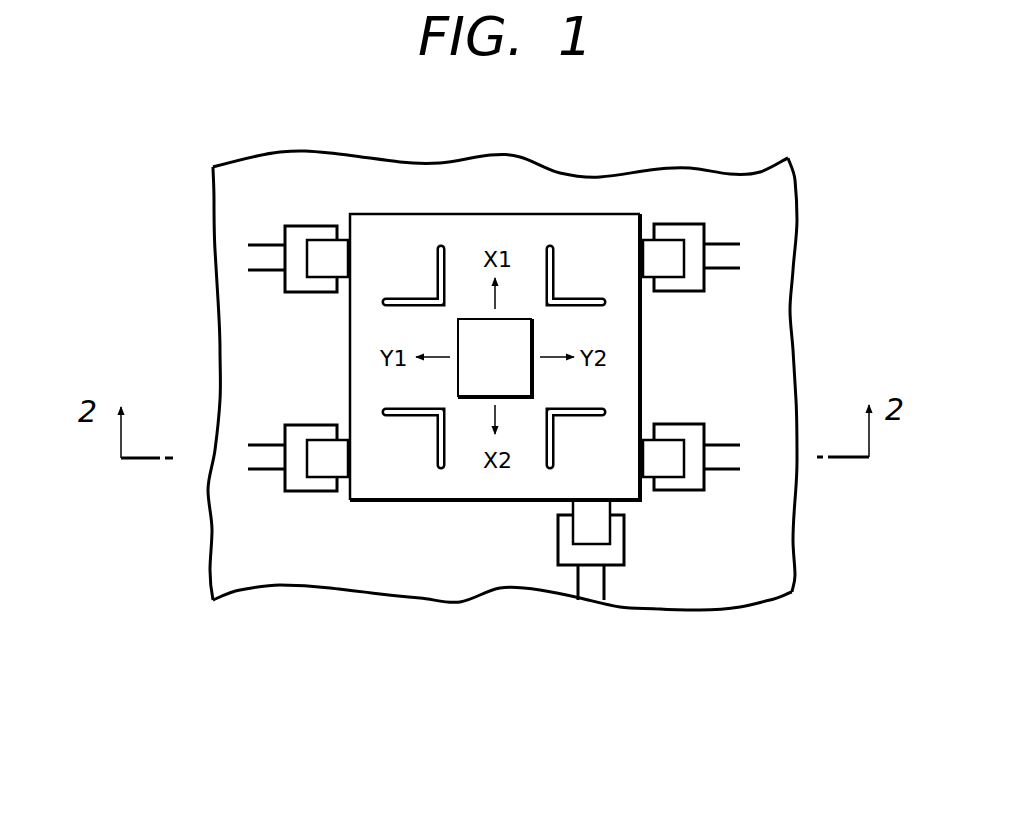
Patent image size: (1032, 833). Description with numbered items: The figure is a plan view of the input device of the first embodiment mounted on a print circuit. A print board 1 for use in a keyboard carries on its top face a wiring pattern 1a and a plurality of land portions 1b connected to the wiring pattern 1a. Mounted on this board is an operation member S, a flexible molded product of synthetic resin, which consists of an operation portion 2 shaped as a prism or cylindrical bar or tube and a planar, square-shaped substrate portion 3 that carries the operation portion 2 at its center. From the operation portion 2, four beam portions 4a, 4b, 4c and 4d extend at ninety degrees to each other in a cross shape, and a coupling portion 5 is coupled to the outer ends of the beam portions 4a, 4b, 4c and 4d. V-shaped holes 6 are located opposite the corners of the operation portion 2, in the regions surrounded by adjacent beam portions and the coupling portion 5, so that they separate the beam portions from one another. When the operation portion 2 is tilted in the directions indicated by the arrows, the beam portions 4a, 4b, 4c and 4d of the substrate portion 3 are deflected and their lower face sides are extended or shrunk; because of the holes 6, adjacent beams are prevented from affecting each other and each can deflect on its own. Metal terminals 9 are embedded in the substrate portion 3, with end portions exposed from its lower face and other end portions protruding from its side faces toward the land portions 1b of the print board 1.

The print board 1 is at (767, 182).
The wiring pattern 1a is at (722, 246).
The land portions 1b is at (316, 232).
The operation portion 2 is at (474, 382).
The substrate portion 3 is at (392, 207).
The beam portion 4a is at (516, 433).
The beam portion 4b is at (515, 283).
The beam portion 4c is at (575, 390).
The beam portion 4d is at (400, 388).
The coupling portion 5 is at (585, 235).
The holes 6 is at (447, 265).
The terminals 9 is at (668, 247).
The operation member S is at (614, 205).